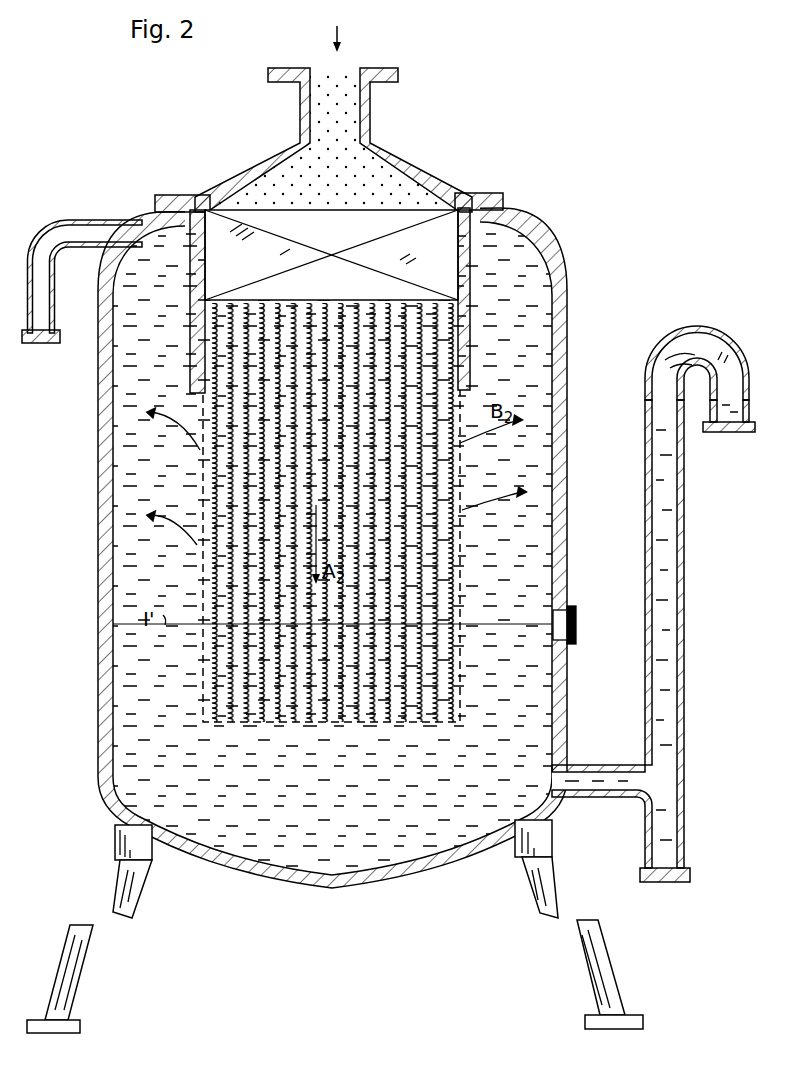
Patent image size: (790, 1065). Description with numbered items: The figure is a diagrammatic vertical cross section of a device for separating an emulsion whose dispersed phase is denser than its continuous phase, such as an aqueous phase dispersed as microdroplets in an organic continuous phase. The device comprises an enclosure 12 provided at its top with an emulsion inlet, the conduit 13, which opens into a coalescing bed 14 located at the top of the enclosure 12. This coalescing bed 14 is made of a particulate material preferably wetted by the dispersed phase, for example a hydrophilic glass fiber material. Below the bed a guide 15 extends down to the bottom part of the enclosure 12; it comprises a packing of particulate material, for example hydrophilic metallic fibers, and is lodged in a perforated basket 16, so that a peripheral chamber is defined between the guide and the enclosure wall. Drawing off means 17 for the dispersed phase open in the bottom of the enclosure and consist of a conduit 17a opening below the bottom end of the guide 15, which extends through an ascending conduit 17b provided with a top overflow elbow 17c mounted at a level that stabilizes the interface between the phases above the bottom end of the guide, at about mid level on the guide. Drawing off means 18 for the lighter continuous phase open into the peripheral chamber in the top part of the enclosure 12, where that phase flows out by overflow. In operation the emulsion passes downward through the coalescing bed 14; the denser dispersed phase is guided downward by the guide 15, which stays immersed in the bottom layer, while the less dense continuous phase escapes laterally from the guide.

The enclosure 12 is at (567, 410).
The conduit 13 is at (368, 112).
The coalescing bed 14 is at (366, 235).
The guide 15 is at (458, 522).
The perforated basket 16 is at (203, 495).
The drawing off means 17 is at (653, 594).
The conduit 17a is at (612, 755).
The ascending conduit 17b is at (672, 597).
The top overflow elbow 17c is at (718, 343).
The drawing off means 18 is at (78, 234).